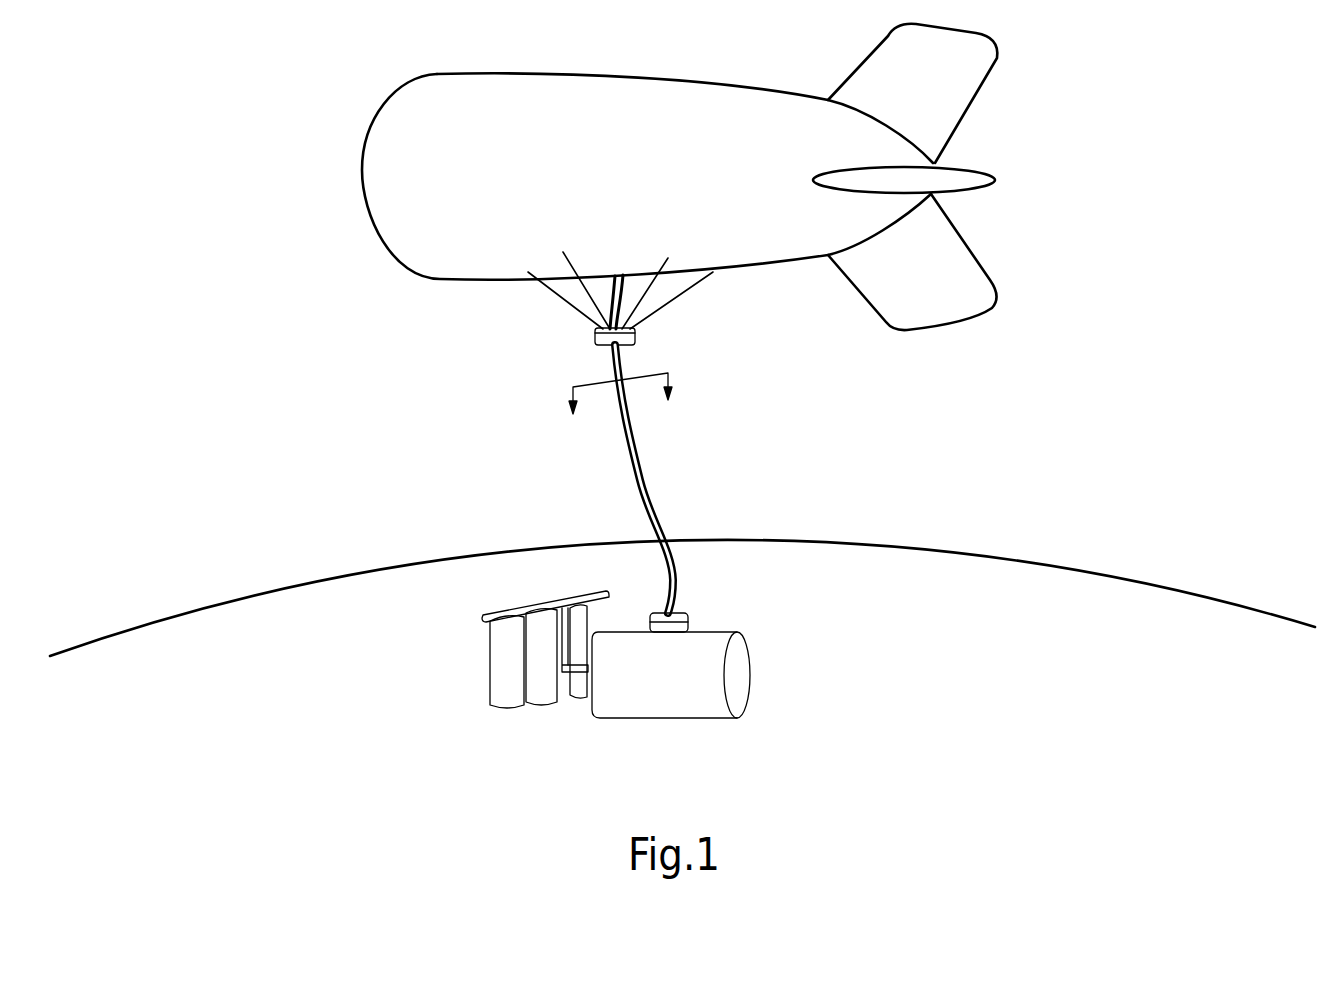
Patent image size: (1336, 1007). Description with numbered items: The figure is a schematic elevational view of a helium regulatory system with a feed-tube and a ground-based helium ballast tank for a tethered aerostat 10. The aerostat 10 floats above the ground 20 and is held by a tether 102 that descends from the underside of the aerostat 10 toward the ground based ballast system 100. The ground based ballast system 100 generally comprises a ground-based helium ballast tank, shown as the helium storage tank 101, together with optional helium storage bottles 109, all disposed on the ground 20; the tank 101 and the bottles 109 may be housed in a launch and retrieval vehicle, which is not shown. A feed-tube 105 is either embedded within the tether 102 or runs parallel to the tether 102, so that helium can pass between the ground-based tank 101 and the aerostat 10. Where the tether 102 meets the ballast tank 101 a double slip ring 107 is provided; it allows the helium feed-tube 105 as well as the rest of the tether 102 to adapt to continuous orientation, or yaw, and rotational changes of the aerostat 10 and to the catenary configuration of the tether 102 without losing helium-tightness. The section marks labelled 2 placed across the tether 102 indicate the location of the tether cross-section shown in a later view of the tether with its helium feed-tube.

The tethered aerostat 10 is at (628, 196).
The section line for FIG. 2 is at (621, 412).
The ground 20 is at (953, 774).
The ground based ballast system 100 is at (432, 732).
The helium storage tank 101 is at (697, 703).
The tether 102 is at (656, 517).
The feed-tube 105 is at (637, 498).
The double slip ring 107 is at (690, 617).
The helium storage bottles 109 is at (435, 670).